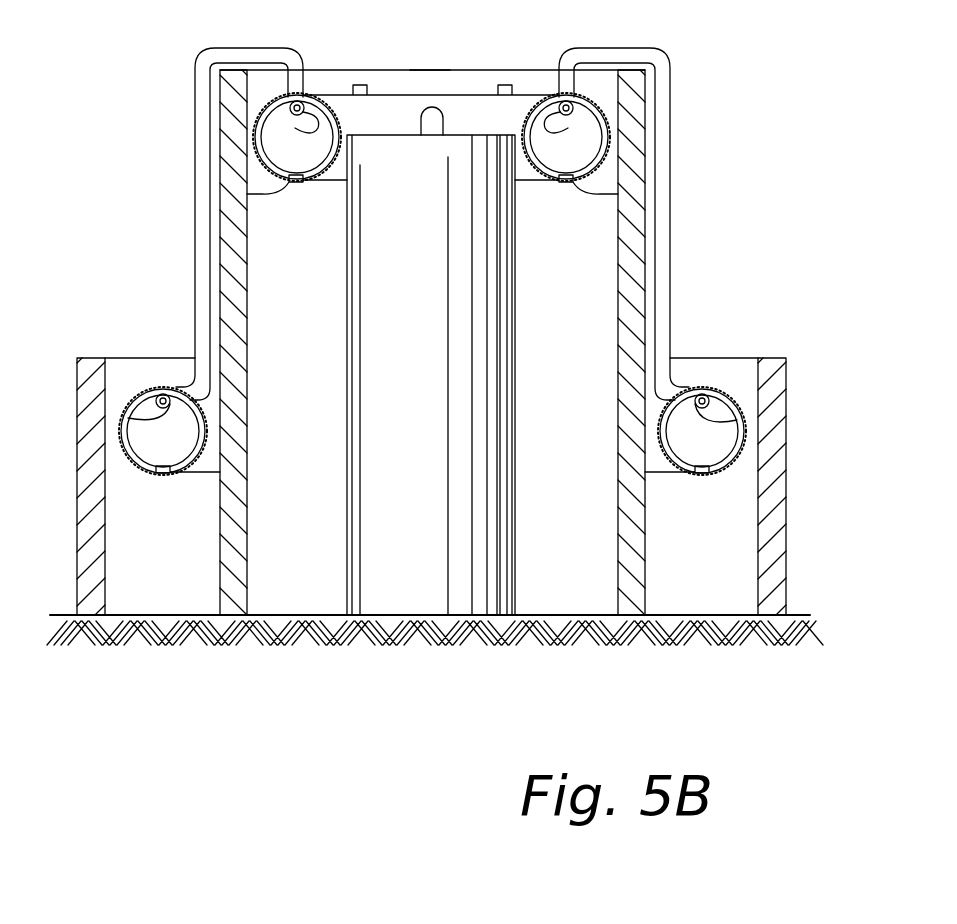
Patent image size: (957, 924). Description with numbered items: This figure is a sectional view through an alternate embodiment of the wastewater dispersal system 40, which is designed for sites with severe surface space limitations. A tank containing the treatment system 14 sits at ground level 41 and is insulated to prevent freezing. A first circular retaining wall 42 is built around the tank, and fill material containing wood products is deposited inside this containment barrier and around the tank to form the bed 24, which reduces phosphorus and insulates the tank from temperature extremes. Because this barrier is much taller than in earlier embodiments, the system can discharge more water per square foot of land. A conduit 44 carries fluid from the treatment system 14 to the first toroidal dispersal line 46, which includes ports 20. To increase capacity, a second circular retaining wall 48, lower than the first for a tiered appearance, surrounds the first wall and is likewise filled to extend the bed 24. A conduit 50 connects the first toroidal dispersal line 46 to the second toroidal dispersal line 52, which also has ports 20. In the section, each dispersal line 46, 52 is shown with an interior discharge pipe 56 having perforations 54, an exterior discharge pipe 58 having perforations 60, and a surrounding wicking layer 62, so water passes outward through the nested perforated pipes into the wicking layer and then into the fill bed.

The treatment system 14 is at (438, 310).
The ports 20 is at (397, 93).
The bed 24 is at (117, 500).
The wastewater dispersal system 40 is at (465, 313).
The ground level 41 is at (713, 635).
The first circular retaining wall 42 is at (232, 215).
The conduit 44 is at (437, 108).
The first toroidal dispersal line 46 is at (430, 70).
The second circular retaining wall 48 is at (77, 594).
The conduit 50 is at (195, 232).
The second toroidal dispersal line 52 is at (135, 386).
The perforations 54 is at (312, 118).
The interior discharge pipe 56 is at (297, 100).
The exterior discharge pipe 58 is at (258, 132).
The perforations 60 is at (288, 182).
The wicking layer 62 is at (258, 120).